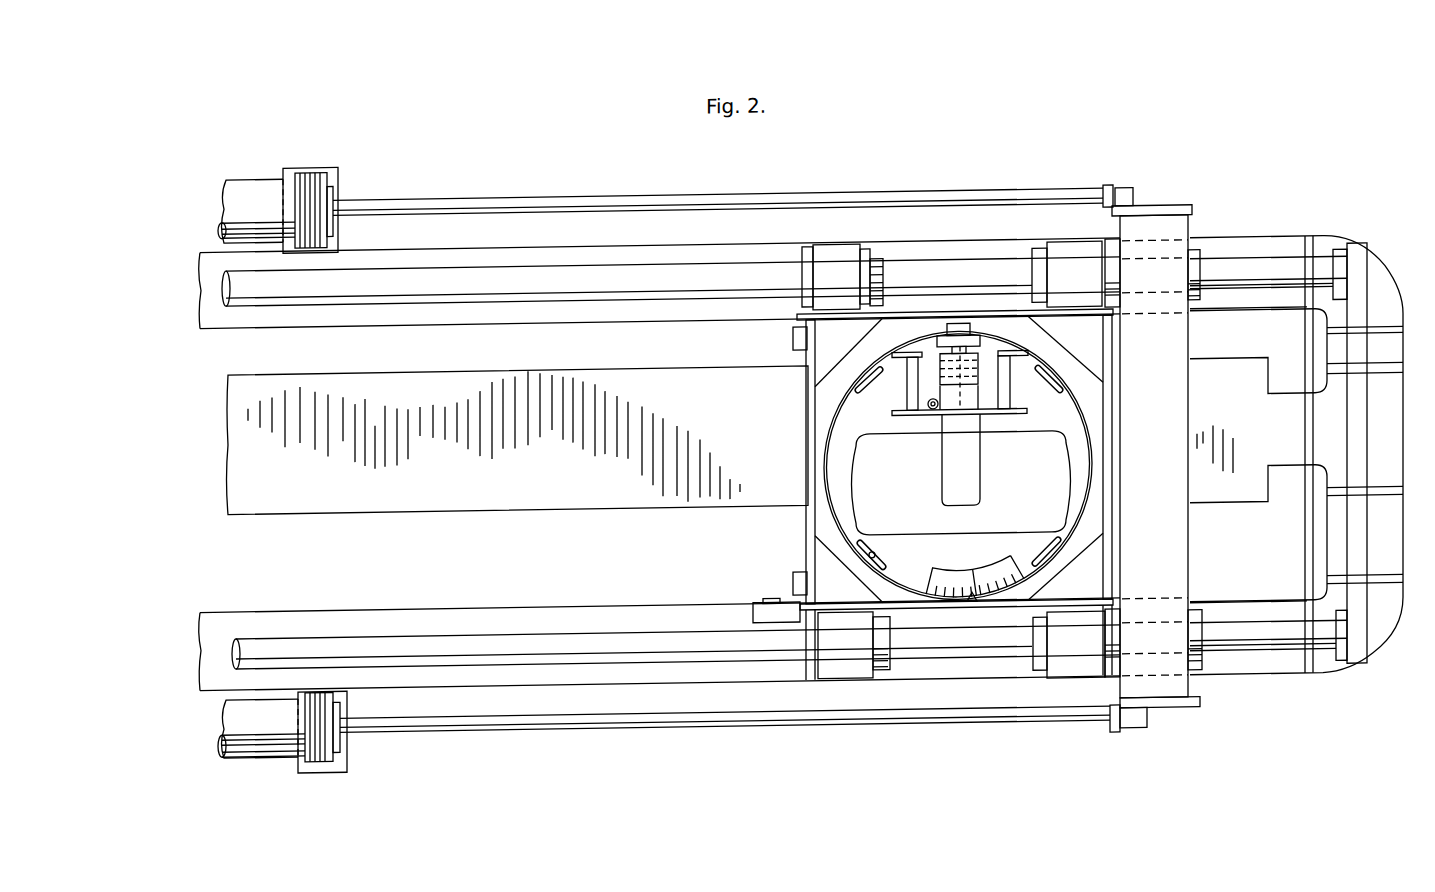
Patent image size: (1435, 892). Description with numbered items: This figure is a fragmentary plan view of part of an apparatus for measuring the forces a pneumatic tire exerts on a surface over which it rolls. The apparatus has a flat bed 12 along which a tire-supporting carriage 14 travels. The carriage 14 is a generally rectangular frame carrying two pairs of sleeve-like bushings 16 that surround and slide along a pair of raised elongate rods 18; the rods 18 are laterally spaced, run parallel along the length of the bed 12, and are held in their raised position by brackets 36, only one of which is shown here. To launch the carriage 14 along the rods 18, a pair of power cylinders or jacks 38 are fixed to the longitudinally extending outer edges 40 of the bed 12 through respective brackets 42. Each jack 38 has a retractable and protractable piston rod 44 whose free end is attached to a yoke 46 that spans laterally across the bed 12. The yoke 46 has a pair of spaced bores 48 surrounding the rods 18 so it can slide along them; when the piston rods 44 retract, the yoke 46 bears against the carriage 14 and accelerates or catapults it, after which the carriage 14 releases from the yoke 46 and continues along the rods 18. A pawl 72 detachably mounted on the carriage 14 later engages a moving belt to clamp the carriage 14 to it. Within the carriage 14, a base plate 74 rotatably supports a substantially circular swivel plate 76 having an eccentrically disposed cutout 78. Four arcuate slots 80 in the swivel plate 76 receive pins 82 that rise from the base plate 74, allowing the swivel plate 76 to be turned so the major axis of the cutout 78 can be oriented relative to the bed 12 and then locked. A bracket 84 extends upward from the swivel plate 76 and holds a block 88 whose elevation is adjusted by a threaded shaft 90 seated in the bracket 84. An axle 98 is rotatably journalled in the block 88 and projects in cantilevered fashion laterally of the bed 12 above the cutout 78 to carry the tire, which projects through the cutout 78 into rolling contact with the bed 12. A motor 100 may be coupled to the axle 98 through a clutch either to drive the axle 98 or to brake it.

The flat bed 12 is at (718, 248).
The tire-supporting carriage 14 is at (798, 426).
The sleeve-like bushings 16 is at (842, 252).
The raised elongate rods 18 is at (703, 297).
The bracket 36 is at (1357, 284).
The power cylinder or jack 38 is at (258, 183).
The longitudinally extending outer edge 40 is at (526, 243).
The bracket 42 is at (338, 162).
The piston rod 44 is at (626, 193).
The yoke 46 is at (1178, 553).
The bore 48 is at (1190, 256).
The pawl 72 is at (758, 615).
The base plate 74 is at (823, 498).
The swivel plate 76 is at (832, 452).
The cutout 78 is at (1062, 482).
The arcuate slot 80 is at (866, 547).
The pin 82 is at (880, 560).
The bracket 84 is at (1015, 392).
The block 88 is at (988, 414).
The threaded shaft 90 is at (932, 414).
The axle 98 is at (981, 488).
The motor 100 is at (946, 333).